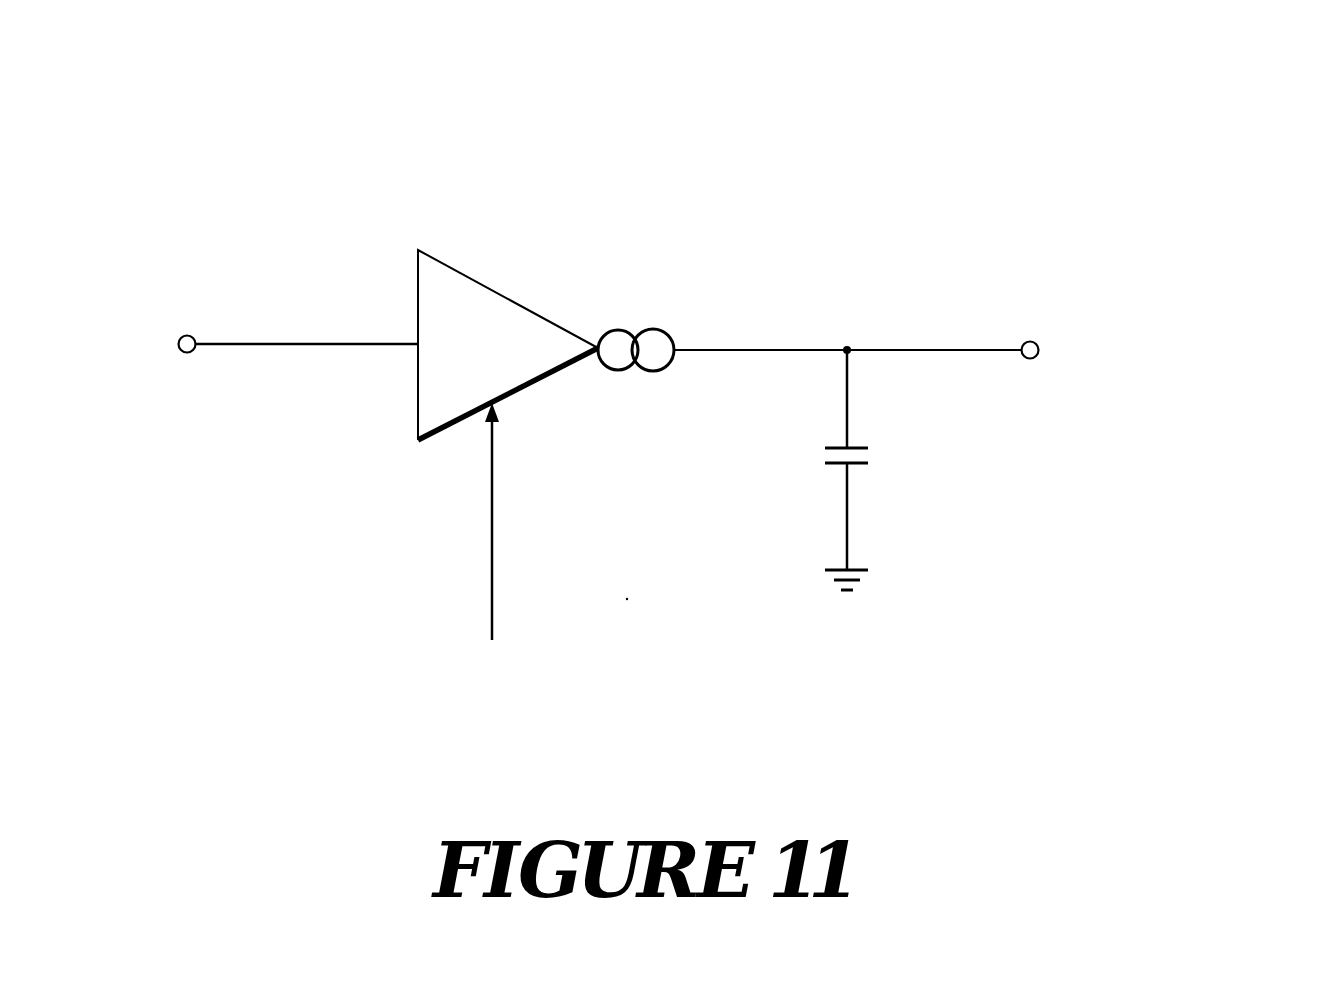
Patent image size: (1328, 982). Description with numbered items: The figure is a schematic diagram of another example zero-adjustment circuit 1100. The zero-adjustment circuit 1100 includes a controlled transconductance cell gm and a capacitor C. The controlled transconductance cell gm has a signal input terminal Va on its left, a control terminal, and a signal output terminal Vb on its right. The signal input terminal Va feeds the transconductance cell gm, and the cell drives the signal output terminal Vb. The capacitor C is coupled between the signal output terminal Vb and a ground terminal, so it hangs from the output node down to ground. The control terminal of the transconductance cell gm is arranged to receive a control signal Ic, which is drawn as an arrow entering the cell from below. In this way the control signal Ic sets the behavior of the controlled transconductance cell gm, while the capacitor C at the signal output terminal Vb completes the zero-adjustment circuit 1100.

The zero-adjustment circuit 1100 is at (1196, 146).
The signal input terminal Va is at (273, 353).
The signal output terminal Vb is at (885, 359).
The controlled transconductance cell gm is at (546, 345).
The capacitor C is at (869, 470).
The control signal Ic is at (486, 561).